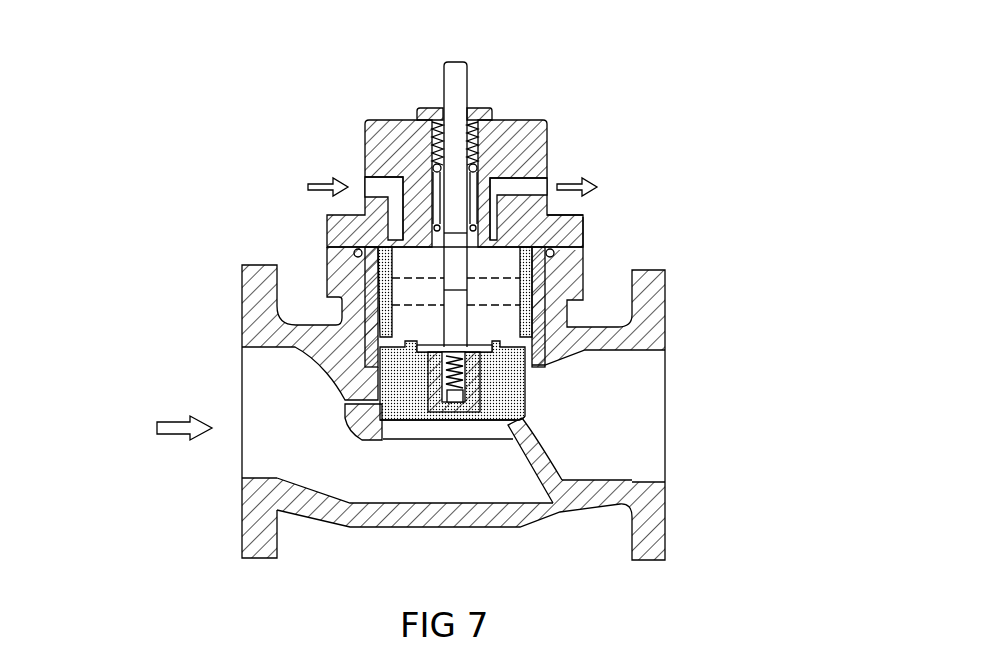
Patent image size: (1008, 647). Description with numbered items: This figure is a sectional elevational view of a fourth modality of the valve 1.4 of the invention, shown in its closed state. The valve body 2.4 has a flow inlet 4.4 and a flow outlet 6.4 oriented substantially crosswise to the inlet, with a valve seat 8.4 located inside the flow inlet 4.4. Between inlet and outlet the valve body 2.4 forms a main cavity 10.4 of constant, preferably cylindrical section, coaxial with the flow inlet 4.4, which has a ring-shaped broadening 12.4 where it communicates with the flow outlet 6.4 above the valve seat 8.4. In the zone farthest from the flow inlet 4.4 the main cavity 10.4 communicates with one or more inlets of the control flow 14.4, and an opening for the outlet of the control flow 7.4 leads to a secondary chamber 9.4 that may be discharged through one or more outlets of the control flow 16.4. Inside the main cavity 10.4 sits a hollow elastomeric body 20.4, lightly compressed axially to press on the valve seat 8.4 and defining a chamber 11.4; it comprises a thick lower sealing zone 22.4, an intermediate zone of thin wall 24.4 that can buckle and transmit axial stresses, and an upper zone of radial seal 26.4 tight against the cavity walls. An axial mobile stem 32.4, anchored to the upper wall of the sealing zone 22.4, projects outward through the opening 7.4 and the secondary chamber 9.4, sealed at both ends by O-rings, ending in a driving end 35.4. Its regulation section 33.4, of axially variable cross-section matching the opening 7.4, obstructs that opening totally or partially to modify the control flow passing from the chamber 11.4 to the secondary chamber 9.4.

The valve 1.4 is at (586, 262).
The valve body 2.4 is at (313, 279).
The flow inlet 4.4 is at (418, 468).
The flow outlet 6.4 is at (541, 430).
The opening for the outlet of the control flow 7.4 is at (537, 182).
The valve seat 8.4 is at (472, 437).
The secondary chamber 9.4 is at (488, 215).
The main cavity 10.4 is at (530, 376).
The chamber 11.4 is at (422, 297).
The ring-shaped broadening 12.4 is at (341, 402).
The inlet of the control flow 14.4 is at (363, 182).
The outlet of the control flow 16.4 is at (548, 186).
The elastomeric body 20.4 is at (523, 402).
The sealing zone 22.4 is at (527, 425).
The zone of thin wall 24.4 is at (652, 312).
The zone of radial seal 26.4 is at (584, 278).
The axial mobile stem 32.4 is at (452, 133).
The section to regulate the volume of the control flow 33.4 is at (415, 187).
The driving end 35.4 is at (455, 97).